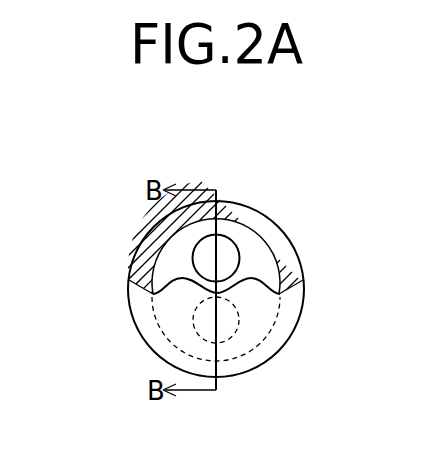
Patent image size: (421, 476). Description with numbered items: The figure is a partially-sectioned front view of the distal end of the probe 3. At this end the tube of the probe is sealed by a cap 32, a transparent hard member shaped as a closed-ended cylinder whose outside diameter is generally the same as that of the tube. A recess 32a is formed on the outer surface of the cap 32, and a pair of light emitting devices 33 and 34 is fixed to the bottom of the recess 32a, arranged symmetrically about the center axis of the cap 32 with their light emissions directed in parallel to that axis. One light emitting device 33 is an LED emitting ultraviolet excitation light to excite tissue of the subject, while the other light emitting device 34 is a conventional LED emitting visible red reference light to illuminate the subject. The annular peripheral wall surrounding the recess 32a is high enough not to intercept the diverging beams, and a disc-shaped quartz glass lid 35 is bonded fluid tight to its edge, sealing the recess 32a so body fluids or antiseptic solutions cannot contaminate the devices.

The probe 3 is at (262, 375).
The cap 32 is at (131, 263).
The recess 32a is at (178, 251).
The light emitting device 33 is at (220, 236).
The light emitting device 34 is at (205, 318).
The lid 35 is at (260, 267).